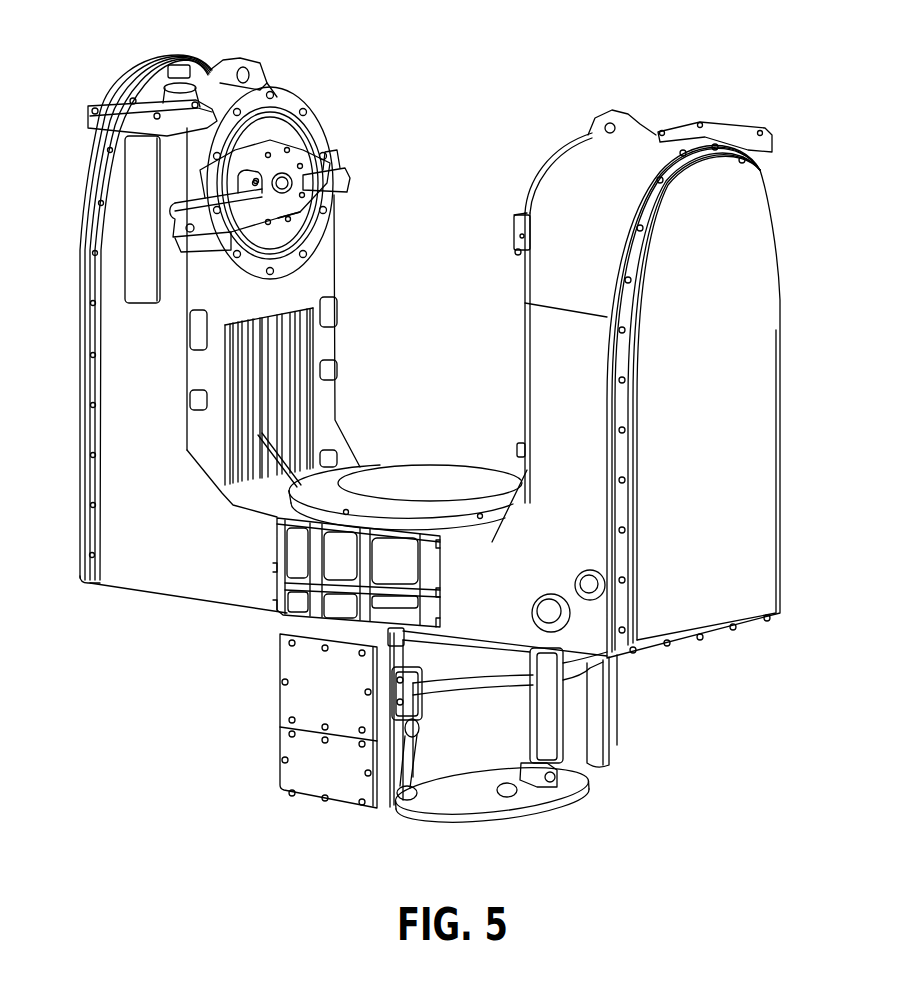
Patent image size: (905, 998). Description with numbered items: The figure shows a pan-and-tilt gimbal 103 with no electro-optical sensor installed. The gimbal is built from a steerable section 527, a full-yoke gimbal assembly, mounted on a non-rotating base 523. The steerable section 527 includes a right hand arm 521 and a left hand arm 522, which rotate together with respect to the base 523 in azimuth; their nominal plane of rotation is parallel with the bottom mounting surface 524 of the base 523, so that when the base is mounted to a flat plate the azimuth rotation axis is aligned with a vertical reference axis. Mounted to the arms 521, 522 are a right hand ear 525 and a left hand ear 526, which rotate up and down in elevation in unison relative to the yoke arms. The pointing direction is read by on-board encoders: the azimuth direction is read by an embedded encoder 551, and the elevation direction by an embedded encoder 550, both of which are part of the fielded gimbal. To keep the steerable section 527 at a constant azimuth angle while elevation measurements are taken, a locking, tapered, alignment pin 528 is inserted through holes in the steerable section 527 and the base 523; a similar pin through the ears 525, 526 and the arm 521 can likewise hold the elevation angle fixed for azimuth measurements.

The pan-and-tilt gimbal 103 is at (80, 428).
The right hand arm 521 is at (318, 266).
The left hand arm 522 is at (520, 291).
The non-rotating base 523 is at (280, 748).
The bottom mounting surface 524 is at (527, 805).
The right hand ear 525 is at (127, 232).
The left hand ear 526 is at (513, 238).
The steerable section 527 is at (87, 490).
The locking, tapered, alignment pin 528 is at (287, 610).
The embedded encoder 550 is at (267, 137).
The embedded encoder 551 is at (430, 477).